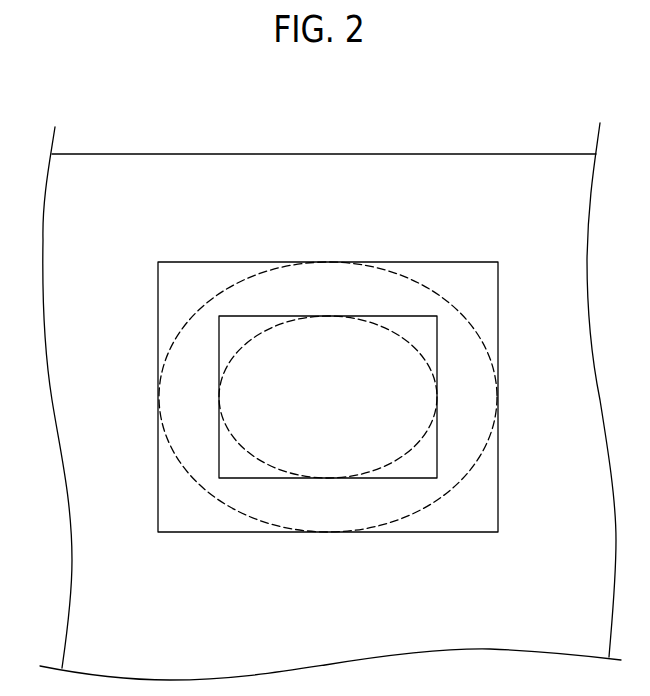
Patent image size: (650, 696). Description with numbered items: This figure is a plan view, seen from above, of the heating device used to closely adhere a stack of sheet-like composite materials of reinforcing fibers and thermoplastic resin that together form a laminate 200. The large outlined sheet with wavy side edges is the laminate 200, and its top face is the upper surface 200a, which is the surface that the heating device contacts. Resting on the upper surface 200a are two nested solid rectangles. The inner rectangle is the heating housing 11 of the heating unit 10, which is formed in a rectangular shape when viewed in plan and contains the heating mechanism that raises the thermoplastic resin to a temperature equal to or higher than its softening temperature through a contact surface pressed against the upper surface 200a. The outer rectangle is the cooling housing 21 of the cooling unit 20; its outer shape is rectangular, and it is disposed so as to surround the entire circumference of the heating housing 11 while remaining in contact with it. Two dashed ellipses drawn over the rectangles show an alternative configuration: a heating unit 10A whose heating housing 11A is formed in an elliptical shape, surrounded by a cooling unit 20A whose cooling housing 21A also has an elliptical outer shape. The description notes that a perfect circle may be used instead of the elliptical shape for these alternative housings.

The laminate 200 is at (507, 152).
The upper surface of the laminate 200a is at (296, 162).
The cooling housing 21 is at (328, 348).
The cooling unit 20 is at (185, 281).
The heating housing 11 is at (328, 329).
The heating unit 10 is at (246, 325).
The heating housing 11A is at (328, 329).
The heating unit 10A is at (329, 333).
The cooling housing 21A is at (328, 356).
The cooling unit 20A is at (418, 297).